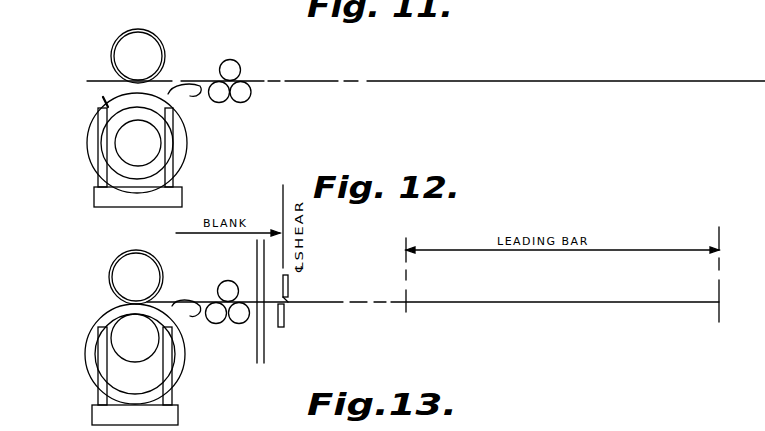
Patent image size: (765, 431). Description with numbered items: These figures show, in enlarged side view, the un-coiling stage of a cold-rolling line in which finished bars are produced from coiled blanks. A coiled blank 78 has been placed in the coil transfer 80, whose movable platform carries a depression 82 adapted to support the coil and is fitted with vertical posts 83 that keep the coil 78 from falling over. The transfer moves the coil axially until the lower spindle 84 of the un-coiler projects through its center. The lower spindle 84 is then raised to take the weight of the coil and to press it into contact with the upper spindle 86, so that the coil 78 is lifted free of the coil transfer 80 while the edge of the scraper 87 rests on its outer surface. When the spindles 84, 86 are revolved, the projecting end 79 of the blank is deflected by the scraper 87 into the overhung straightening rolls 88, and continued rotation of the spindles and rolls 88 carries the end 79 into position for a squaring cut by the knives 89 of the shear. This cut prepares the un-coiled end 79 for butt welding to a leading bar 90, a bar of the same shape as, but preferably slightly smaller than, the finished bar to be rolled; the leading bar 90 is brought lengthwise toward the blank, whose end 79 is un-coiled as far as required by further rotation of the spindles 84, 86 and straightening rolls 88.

In FIG. 11, the coiled blank 78 is at (90, 163).
In FIG. 12, the coiled blank 78 is at (88, 362).
In FIG. 11, the projecting end 79 is at (104, 97).
In FIG. 12, the projecting end 79 is at (288, 298).
In FIG. 11, the coil transfer 80 is at (94, 198).
In FIG. 12, the coil transfer 80 is at (92, 417).
In FIG. 11, the depression 82 is at (107, 41).
In FIG. 11, the vertical posts 83 is at (98, 115).
In FIG. 12, the vertical posts 83 is at (98, 395).
In FIG. 11, the lower spindle 84 is at (128, 138).
In FIG. 12, the lower spindle 84 is at (118, 342).
In FIG. 11, the upper spindle 86 is at (110, 53).
In FIG. 12, the upper spindle 86 is at (110, 272).
In FIG. 11, the scraper 87 is at (190, 96).
In FIG. 12, the scraper 87 is at (190, 316).
In FIG. 11, the overhung straightening rolls 88 is at (242, 82).
In FIG. 12, the overhung straightening rolls 88 is at (241, 303).
In FIG. 12, the knives 89 is at (288, 285).
In FIG. 11, the leading bar 90 is at (490, 77).
In FIG. 12, the leading bar 90 is at (548, 302).